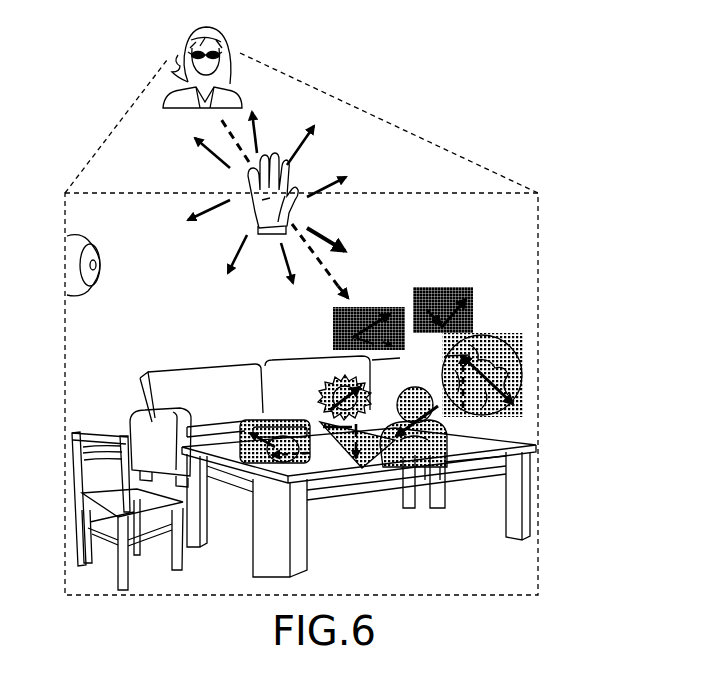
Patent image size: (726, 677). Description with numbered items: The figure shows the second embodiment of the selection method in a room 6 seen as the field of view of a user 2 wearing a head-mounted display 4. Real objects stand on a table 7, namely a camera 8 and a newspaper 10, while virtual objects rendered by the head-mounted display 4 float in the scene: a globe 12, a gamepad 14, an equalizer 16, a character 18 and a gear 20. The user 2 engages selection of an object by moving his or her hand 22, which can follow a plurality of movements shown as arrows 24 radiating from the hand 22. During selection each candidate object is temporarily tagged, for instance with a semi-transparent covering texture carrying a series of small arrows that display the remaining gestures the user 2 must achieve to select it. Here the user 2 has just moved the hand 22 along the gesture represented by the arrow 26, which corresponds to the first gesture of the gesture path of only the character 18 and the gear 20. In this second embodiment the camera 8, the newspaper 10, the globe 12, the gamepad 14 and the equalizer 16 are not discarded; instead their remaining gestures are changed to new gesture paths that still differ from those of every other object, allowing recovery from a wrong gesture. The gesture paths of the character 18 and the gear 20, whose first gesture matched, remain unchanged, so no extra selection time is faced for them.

The user 2 is at (240, 90).
The head-mounted display 4 is at (218, 53).
The room 6 is at (515, 323).
The table 7 is at (515, 510).
The camera 8 is at (253, 415).
The newspaper 10 is at (360, 465).
The globe 12 is at (523, 373).
The gamepad 14 is at (470, 288).
The equalizer 16 is at (388, 302).
The character 18 is at (425, 432).
The gear 20 is at (327, 390).
The hand 22 is at (290, 165).
The arrows 24 is at (350, 175).
The arrow 26 is at (217, 115).